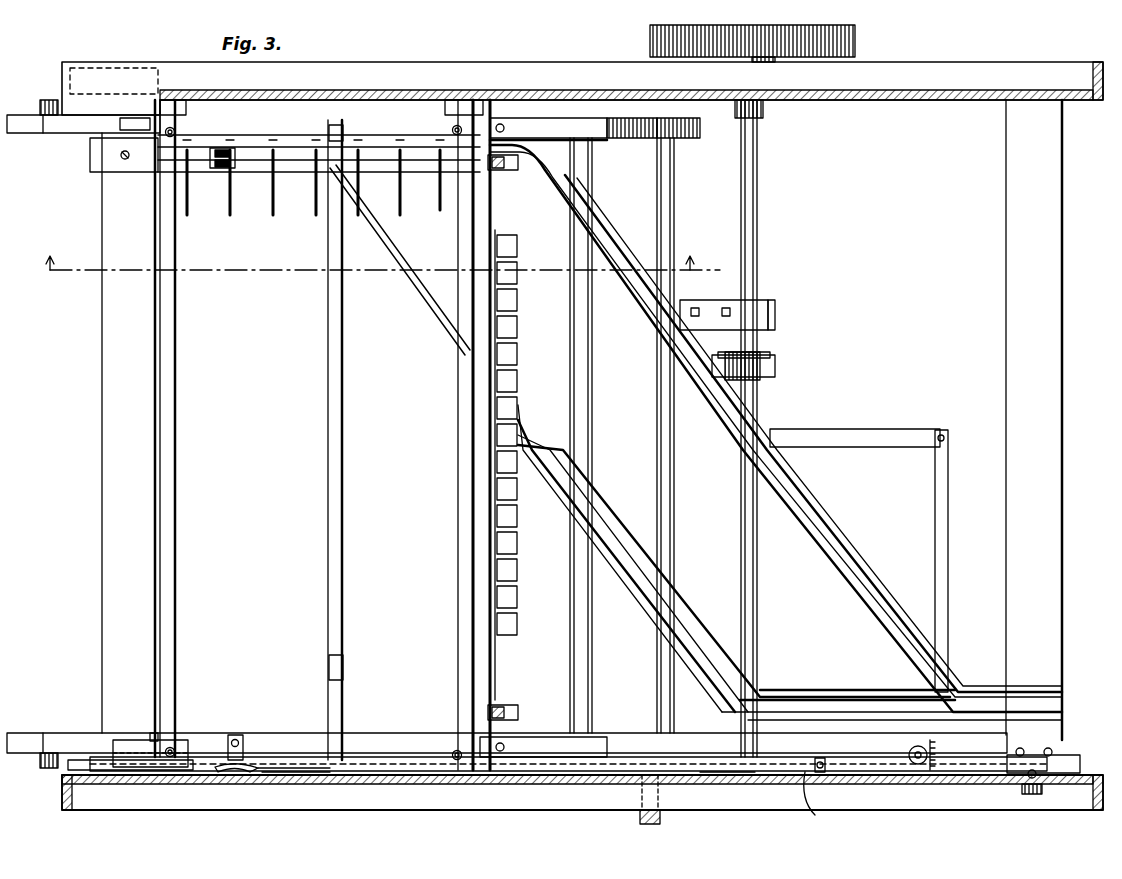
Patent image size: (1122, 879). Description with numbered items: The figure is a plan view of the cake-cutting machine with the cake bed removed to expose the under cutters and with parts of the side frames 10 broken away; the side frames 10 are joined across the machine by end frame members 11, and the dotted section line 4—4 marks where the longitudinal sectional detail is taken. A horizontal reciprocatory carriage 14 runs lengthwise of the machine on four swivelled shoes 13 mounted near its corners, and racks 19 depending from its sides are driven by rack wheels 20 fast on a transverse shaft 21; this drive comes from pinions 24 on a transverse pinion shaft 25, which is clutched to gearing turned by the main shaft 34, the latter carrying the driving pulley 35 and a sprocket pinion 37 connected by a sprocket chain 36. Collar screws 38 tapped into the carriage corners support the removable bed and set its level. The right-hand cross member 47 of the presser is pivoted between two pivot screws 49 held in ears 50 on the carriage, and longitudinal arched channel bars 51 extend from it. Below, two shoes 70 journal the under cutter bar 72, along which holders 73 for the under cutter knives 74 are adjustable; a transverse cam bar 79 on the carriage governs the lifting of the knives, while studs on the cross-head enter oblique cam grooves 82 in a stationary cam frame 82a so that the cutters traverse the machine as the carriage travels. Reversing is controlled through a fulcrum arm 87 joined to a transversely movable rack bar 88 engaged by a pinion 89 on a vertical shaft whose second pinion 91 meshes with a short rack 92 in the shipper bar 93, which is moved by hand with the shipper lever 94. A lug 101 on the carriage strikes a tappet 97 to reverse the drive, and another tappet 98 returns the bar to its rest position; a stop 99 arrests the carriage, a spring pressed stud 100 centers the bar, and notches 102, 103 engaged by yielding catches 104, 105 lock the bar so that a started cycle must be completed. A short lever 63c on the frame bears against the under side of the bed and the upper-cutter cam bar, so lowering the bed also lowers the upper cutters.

The section line 4 is at (372, 268).
The side frame 10 is at (405, 70).
The end frame member 11 is at (115, 362).
The shoe 13 is at (175, 106).
The reciprocatory carriage 14 is at (458, 437).
The rack 19 is at (20, 118).
The rack wheel 20 is at (622, 138).
The transverse shaft 21 is at (592, 188).
The pinion 24 is at (688, 138).
The pinion shaft 25 is at (676, 200).
The main shaft 34 is at (760, 207).
The driving pulley 35 is at (858, 45).
The sprocket chain 36 is at (760, 368).
The sprocket pinion 37 is at (770, 353).
The collar screw 38 is at (178, 128).
The cross member 47 is at (498, 676).
The pivot screw 49 is at (487, 138).
The ear 50 is at (520, 145).
The channel bar 51 is at (520, 320).
The short lever 63c is at (153, 733).
The shoe 70 is at (178, 162).
The under cutter bar 72 is at (252, 165).
The holder 73 is at (280, 162).
The under cutter knife 74 is at (266, 222).
The transverse cam bar 79 is at (330, 405).
The cam groove 82 is at (550, 460).
The stationary cam frame 82a is at (632, 533).
The fulcrum arm 87 is at (870, 432).
The rack bar 88 is at (948, 558).
The pinion 89 is at (908, 752).
The second pinion 91 is at (936, 760).
The short rack 92 is at (925, 773).
The shipper bar 93 is at (35, 770).
The shipper lever 94 is at (638, 818).
The tappet 97 is at (820, 758).
The tappet 98 is at (215, 768).
The stop 99 is at (125, 125).
The spring pressed stud 100 is at (1030, 795).
The lug 101 is at (242, 736).
The notch 102 is at (248, 776).
The notch 103 is at (815, 815).
The catch 104 is at (292, 776).
The catch 105 is at (760, 778).